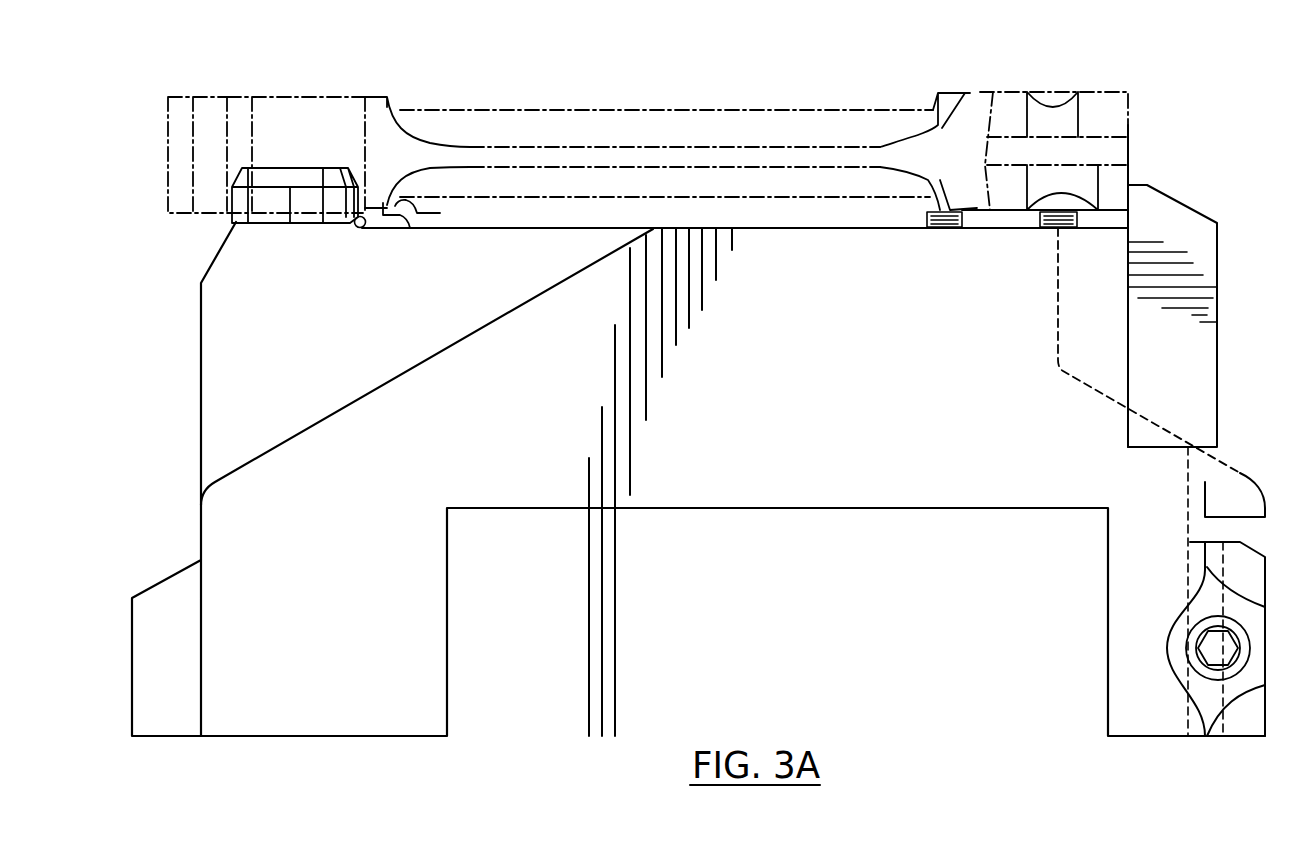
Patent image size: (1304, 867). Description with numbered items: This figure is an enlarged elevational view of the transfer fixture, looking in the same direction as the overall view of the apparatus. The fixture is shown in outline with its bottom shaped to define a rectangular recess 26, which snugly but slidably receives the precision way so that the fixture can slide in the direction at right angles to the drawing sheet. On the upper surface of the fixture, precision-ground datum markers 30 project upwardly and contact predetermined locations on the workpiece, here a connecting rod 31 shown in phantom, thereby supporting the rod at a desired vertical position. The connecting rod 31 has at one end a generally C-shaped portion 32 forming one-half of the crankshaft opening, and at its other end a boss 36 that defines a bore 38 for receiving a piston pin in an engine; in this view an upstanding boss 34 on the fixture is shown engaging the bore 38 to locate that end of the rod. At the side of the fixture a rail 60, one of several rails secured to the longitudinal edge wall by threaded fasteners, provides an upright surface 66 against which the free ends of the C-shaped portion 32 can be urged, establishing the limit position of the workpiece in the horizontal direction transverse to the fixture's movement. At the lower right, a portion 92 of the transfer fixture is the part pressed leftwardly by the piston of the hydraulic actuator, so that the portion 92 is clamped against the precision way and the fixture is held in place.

The rectangular recess 26 is at (886, 576).
The datum markers 30 is at (923, 205).
The connecting rod 31 is at (758, 130).
The C-shaped portion 32 is at (1150, 97).
The upstanding boss 34 is at (308, 177).
The boss 36 is at (208, 112).
The bore 38 is at (232, 112).
The rail 60 is at (1217, 307).
The upright surfaces 66 is at (1127, 288).
The portion of the transfer fixture 92 is at (1122, 651).